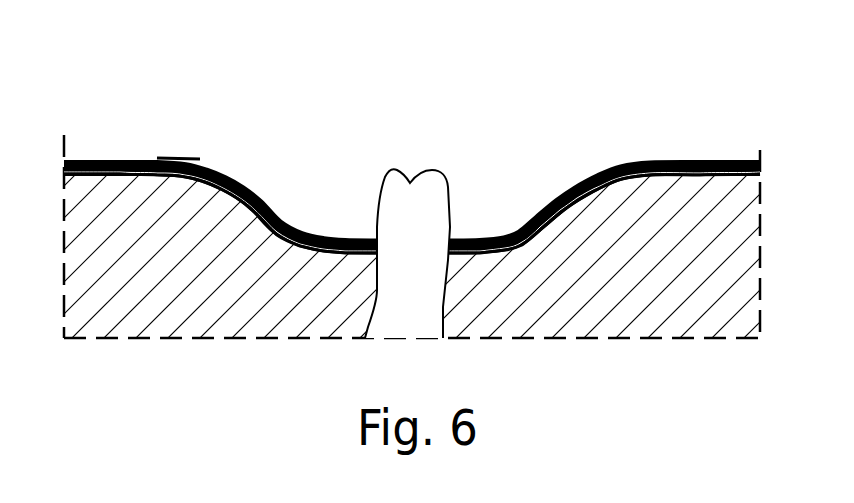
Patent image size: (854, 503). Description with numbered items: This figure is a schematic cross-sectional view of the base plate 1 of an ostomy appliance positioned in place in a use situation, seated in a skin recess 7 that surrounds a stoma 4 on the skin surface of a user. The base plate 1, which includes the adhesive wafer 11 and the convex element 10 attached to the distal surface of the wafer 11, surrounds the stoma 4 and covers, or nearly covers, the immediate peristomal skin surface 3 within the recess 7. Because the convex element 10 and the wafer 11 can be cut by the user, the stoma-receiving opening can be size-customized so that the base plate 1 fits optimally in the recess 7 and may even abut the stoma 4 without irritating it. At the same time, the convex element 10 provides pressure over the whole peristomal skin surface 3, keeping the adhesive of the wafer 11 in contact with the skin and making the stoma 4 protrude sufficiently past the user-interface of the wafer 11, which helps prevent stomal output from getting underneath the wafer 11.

The base plate 1 is at (228, 80).
The peristomal skin surface 3 is at (338, 237).
The stoma 4 is at (438, 182).
The skin recess 7 is at (292, 249).
The convex element 10 is at (257, 187).
The adhesive wafer 11 is at (673, 142).